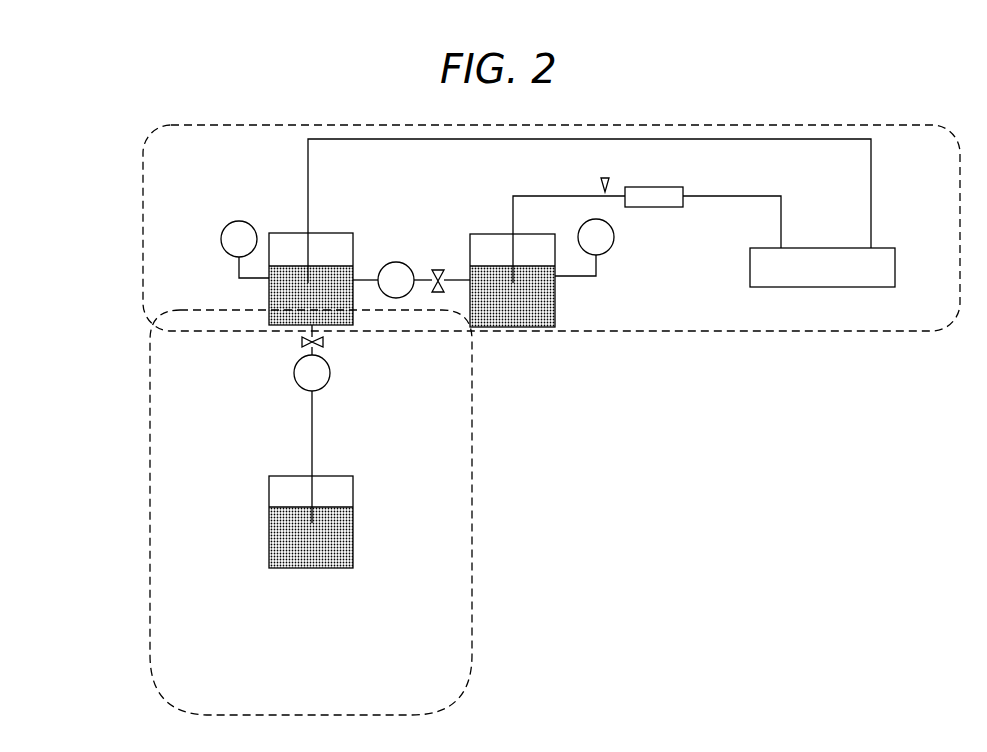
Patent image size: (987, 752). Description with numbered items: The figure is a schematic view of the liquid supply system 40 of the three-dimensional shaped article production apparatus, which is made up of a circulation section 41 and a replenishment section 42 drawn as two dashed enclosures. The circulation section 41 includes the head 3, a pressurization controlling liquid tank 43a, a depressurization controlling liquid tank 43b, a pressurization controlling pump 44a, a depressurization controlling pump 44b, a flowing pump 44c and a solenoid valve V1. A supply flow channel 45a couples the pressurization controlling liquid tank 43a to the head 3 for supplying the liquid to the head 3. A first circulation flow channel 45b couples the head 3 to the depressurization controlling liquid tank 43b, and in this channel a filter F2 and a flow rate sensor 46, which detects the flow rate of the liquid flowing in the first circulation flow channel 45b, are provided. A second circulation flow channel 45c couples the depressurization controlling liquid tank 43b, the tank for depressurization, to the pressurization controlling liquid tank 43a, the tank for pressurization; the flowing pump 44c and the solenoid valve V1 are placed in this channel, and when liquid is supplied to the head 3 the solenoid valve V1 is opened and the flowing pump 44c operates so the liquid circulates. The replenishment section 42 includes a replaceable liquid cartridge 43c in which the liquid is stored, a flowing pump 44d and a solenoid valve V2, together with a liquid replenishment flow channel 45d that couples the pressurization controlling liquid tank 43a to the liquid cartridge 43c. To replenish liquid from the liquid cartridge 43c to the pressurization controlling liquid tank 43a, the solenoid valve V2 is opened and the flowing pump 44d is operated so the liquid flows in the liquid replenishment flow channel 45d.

The liquid supply system 40 is at (83, 235).
The circulation section 41 is at (143, 256).
The replenishment section 42 is at (150, 372).
The head 3 is at (895, 268).
The pressurization controlling liquid tank 43a is at (269, 293).
The depressurization controlling liquid tank 43b is at (555, 313).
The liquid cartridge 43c is at (353, 552).
The pressurization controlling pump 44a is at (228, 228).
The depressurization controlling pump 44b is at (611, 245).
The flowing pump 44c is at (398, 262).
The flowing pump 44d is at (326, 385).
The supply flow channel 45a is at (871, 183).
The first circulation flow channel 45b is at (728, 197).
The second circulation flow channel 45c is at (358, 278).
The liquid replenishment flow channel 45d is at (312, 452).
The flow rate sensor 46 is at (605, 178).
The filter F2 is at (683, 188).
The solenoid valve V1 is at (438, 270).
The solenoid valve V2 is at (323, 343).